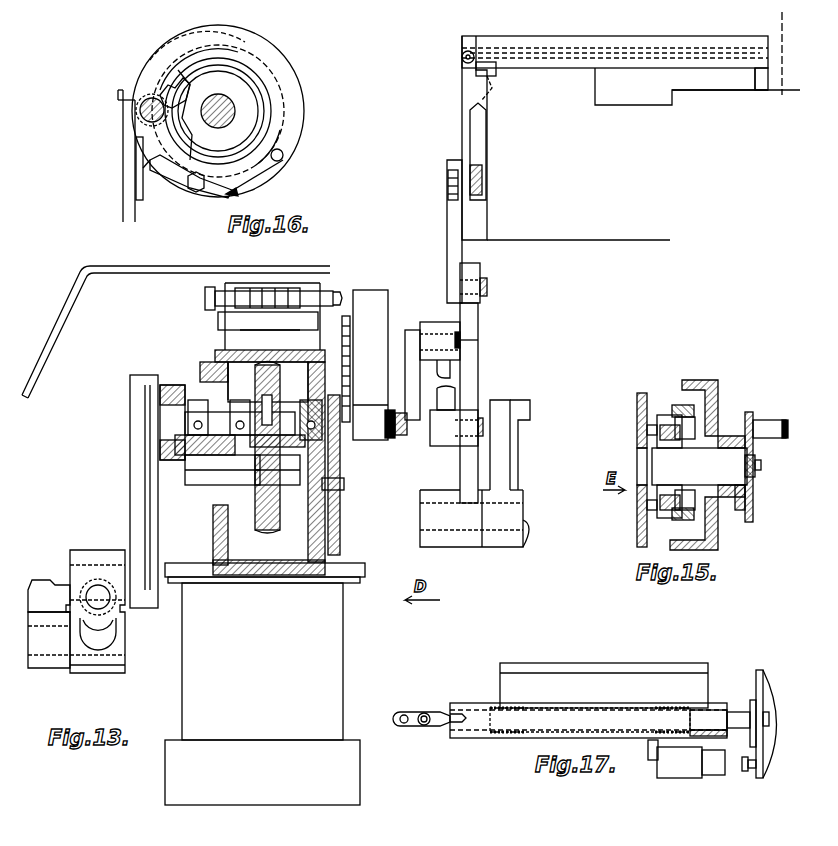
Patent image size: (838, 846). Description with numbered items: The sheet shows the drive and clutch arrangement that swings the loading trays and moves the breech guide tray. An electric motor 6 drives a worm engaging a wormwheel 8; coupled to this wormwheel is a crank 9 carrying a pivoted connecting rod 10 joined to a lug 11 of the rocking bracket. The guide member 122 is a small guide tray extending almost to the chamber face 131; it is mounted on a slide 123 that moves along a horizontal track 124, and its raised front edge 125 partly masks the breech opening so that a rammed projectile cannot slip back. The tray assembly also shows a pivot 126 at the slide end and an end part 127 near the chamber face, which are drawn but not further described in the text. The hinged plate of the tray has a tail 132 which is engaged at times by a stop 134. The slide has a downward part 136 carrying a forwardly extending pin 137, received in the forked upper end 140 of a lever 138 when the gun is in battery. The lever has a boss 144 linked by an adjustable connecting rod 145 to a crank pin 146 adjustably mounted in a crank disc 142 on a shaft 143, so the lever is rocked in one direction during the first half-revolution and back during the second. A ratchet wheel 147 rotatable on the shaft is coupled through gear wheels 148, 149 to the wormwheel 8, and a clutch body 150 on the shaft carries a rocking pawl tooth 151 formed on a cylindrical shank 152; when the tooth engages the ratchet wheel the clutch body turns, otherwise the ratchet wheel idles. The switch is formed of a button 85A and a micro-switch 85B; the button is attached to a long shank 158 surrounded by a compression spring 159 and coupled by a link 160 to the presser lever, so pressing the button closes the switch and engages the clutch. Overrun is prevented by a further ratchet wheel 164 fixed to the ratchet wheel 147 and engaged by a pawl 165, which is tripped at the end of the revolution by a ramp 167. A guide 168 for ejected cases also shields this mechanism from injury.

In FIG. 13, the electric motor 6 is at (343, 633).
In FIG. 13, the wormwheel 8 is at (275, 448).
In FIG. 13, the crank 9 is at (130, 505).
In FIG. 13, the connecting rod 10 is at (112, 638).
In FIG. 13, the lug 11 is at (36, 650).
In FIG. 17, the button 85A is at (755, 772).
In FIG. 17, the micro-switch 85B is at (695, 778).
In FIG. 13, the guide member 122 is at (608, 48).
In FIG. 13, the slide 123 is at (462, 118).
In FIG. 13, the horizontal track 124 is at (480, 133).
In FIG. 13, the front edge 125 is at (556, 40).
In FIG. 13, the pivot pin 126 is at (461, 57).
In FIG. 13, the end block 127 is at (754, 82).
In FIG. 13, the chamber face 131 is at (781, 85).
In FIG. 13, the tail 132 is at (490, 92).
In FIG. 13, the stop 134 is at (476, 70).
In FIG. 13, the slide part 136 is at (450, 225).
In FIG. 13, the pin 137 is at (488, 286).
In FIG. 13, the lever 138 is at (478, 358).
In FIG. 13, the forked upper end 140 is at (478, 268).
In FIG. 15, the crank disc 142 is at (740, 510).
In FIG. 16, the shaft 143 is at (214, 124).
In FIG. 15, the shaft 143 is at (705, 462).
In FIG. 13, the boss 144 is at (460, 446).
In FIG. 13, the connecting rod 145 is at (450, 392).
In FIG. 13, the crank pin 146 is at (455, 335).
In FIG. 15, the crank pin 146 is at (768, 428).
In FIG. 16, the ratchet wheel 147 is at (166, 96).
In FIG. 15, the ratchet wheel 147 is at (688, 405).
In FIG. 13, the gear wheel 148 is at (340, 528).
In FIG. 13, the gear wheel 149 is at (341, 316).
In FIG. 15, the gear wheel 149 is at (660, 415).
In FIG. 16, the clutch body 150 is at (290, 138).
In FIG. 13, the clutch body 150 is at (384, 292).
In FIG. 15, the clutch body 150 is at (710, 382).
In FIG. 16, the rocking pawl tooth 151 is at (150, 100).
In FIG. 16, the cylindrical shank 152 is at (196, 115).
In FIG. 17, the shank 158 is at (616, 712).
In FIG. 17, the compression spring 159 is at (522, 710).
In FIG. 17, the link 160 is at (414, 712).
In FIG. 16, the ratchet wheel 164 is at (250, 182).
In FIG. 16, the pawl 165 is at (182, 186).
In FIG. 16, the ramp 167 is at (147, 175).
In FIG. 13, the guide 168 is at (155, 266).